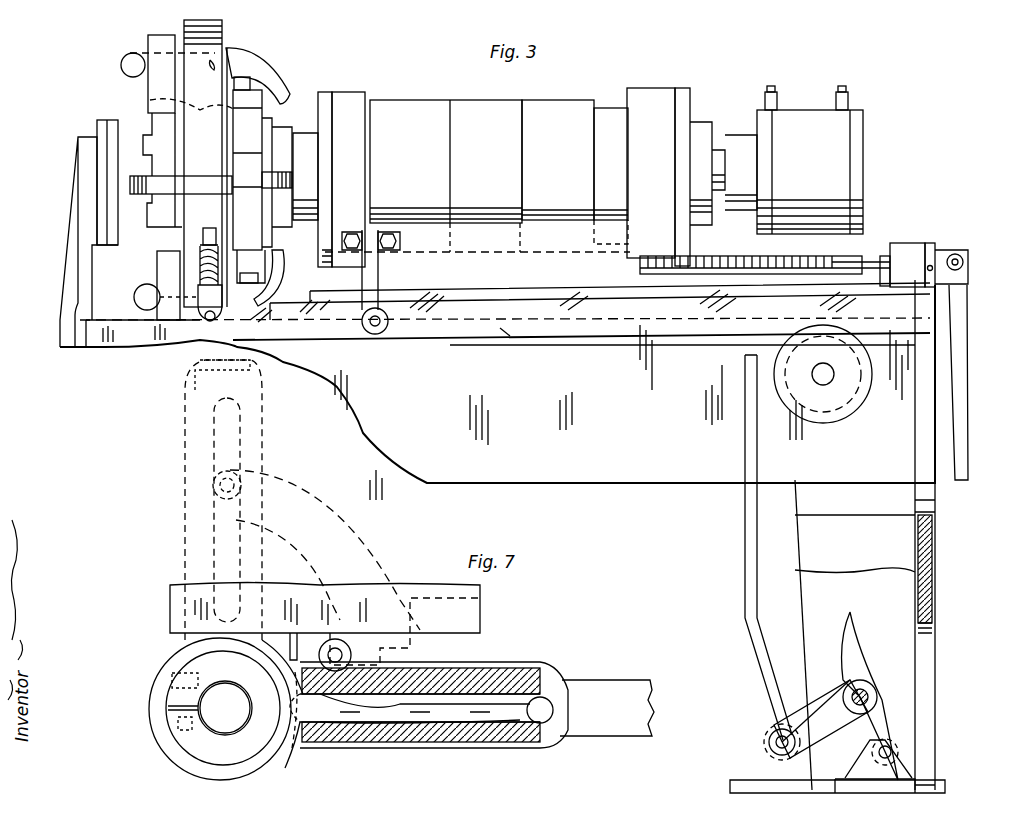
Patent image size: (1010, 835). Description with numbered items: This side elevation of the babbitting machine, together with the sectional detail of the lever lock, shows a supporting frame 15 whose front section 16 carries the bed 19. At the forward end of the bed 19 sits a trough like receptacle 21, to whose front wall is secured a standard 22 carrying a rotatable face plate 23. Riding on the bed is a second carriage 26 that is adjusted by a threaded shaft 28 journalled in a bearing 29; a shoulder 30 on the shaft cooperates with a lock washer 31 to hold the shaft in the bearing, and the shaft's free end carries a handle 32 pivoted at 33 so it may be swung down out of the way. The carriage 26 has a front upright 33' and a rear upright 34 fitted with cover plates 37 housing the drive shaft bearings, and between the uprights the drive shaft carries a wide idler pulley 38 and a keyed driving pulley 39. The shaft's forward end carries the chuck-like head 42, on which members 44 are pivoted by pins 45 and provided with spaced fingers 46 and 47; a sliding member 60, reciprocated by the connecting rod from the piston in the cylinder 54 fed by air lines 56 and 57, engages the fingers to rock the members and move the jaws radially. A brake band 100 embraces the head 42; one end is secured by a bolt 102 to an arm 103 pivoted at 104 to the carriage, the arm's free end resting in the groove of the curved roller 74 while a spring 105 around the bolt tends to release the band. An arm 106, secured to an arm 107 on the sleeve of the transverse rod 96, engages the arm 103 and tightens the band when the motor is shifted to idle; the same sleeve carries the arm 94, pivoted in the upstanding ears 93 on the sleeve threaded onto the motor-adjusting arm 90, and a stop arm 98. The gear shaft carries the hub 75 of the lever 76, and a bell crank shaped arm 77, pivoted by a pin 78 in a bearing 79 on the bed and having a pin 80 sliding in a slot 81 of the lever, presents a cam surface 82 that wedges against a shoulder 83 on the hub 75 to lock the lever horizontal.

In FIG. 3, the supporting frame 15 is at (938, 588).
In FIG. 3, the front section 16 is at (935, 500).
In FIG. 3, the bed 19 is at (580, 470).
In FIG. 3, the trough like receptacle 21 is at (262, 375).
In FIG. 3, the standard 22 is at (68, 335).
In FIG. 3, the face plate 23 is at (112, 120).
In FIG. 3, the second carriage 26 is at (505, 293).
In FIG. 3, the threaded shaft 28 is at (722, 256).
In FIG. 3, the bearing 29 is at (908, 243).
In FIG. 3, the shoulder 30 is at (885, 256).
In FIG. 3, the lock washer 31 is at (930, 243).
In FIG. 3, the handle 32 is at (967, 380).
In FIG. 3, the pivot 33 is at (954, 247).
In FIG. 3, the front upright 33' is at (344, 164).
In FIG. 3, the rear upright 34 is at (655, 104).
In FIG. 3, the cover plates 37 is at (320, 112).
In FIG. 3, the idler pulley 38 is at (410, 120).
In FIG. 3, the driving pulley 39 is at (570, 118).
In FIG. 3, the head 42 is at (262, 70).
In FIG. 3, the members 44 is at (136, 56).
In FIG. 3, the pins 45 is at (205, 163).
In FIG. 3, the fingers 46 is at (275, 180).
In FIG. 3, the fingers 47 is at (290, 96).
In FIG. 3, the cylinder 54 is at (840, 140).
In FIG. 3, the air line 56 is at (777, 98).
In FIG. 3, the air line 57 is at (848, 98).
In FIG. 3, the member 60 is at (253, 230).
In FIG. 3, the curved roller 74 is at (862, 410).
In FIG. 7, the hub 75 is at (168, 750).
In FIG. 3, the lever 76 is at (195, 390).
In FIG. 7, the lever 76 is at (622, 680).
In FIG. 3, the bell crank shaped arm 77 is at (380, 575).
In FIG. 7, the bell crank shaped arm 77 is at (395, 700).
In FIG. 7, the pin 78 is at (350, 655).
In FIG. 7, the bearing 79 is at (322, 650).
In FIG. 3, the pin 80 is at (213, 485).
In FIG. 7, the pin 80 is at (553, 710).
In FIG. 7, the slot 81 is at (495, 698).
In FIG. 7, the cam surface 82 is at (480, 600).
In FIG. 7, the shoulder 83 is at (322, 755).
In FIG. 3, the arm 90 is at (752, 780).
In FIG. 3, the upstanding ears 93 is at (898, 768).
In FIG. 3, the arm 94 is at (858, 730).
In FIG. 3, the rod 96 is at (868, 696).
In FIG. 3, the arm 98 is at (855, 652).
In FIG. 3, the brake band 100 is at (214, 62).
In FIG. 3, the bolt 102 is at (200, 298).
In FIG. 3, the arm 103 is at (487, 322).
In FIG. 3, the pivot 104 is at (378, 331).
In FIG. 3, the spring 105 is at (200, 268).
In FIG. 3, the arm 106 is at (742, 455).
In FIG. 3, the arm 107 is at (815, 697).